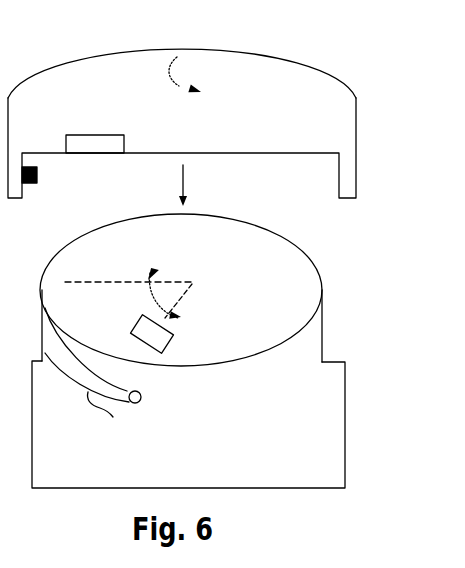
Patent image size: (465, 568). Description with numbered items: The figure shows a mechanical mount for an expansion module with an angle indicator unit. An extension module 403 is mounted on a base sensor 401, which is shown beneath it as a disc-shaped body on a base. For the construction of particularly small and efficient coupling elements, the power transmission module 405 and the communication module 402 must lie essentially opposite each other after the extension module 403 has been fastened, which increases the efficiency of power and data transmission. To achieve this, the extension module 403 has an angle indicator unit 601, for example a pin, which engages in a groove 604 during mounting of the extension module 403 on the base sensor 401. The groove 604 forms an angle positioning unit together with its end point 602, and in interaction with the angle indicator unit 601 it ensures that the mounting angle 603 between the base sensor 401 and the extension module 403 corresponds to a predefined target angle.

The base sensor 401 is at (345, 418).
The communication module 402 is at (172, 340).
The extension module 403 is at (299, 65).
The power transmission module 405 is at (124, 137).
The angle indicator unit 601 is at (37, 176).
The end point 602 is at (141, 397).
The mounting angle 603 is at (216, 273).
The groove 604 is at (91, 380).